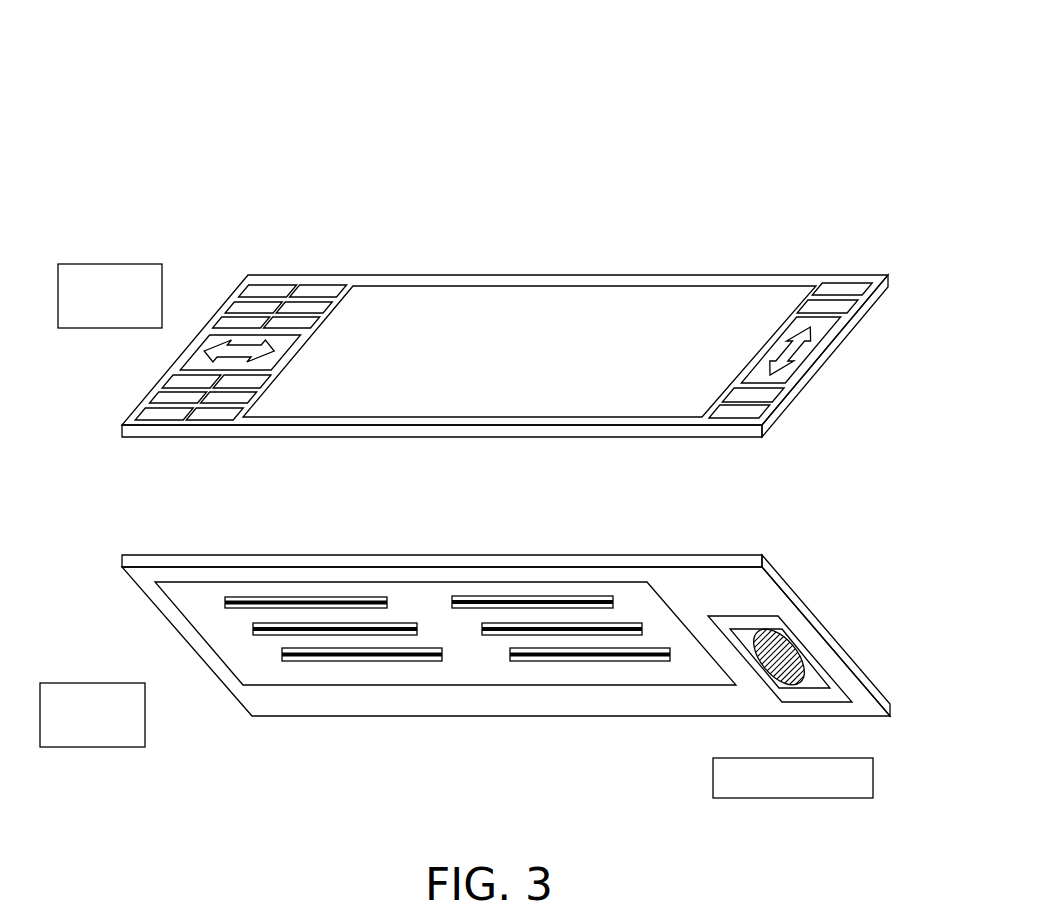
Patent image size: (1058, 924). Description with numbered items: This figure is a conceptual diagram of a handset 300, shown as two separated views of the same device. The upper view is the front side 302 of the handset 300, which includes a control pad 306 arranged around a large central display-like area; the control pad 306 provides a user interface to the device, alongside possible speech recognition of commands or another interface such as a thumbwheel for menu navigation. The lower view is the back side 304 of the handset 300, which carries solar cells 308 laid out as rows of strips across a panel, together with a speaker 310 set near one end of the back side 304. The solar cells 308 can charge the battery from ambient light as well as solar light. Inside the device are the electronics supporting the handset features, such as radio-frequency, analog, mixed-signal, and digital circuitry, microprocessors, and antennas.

The handset 300 is at (752, 124).
The front side 302 is at (473, 339).
The back side 304 is at (487, 661).
The control pad 306 is at (465, 330).
The solar cells 308 is at (388, 664).
The speaker 310 is at (817, 707).